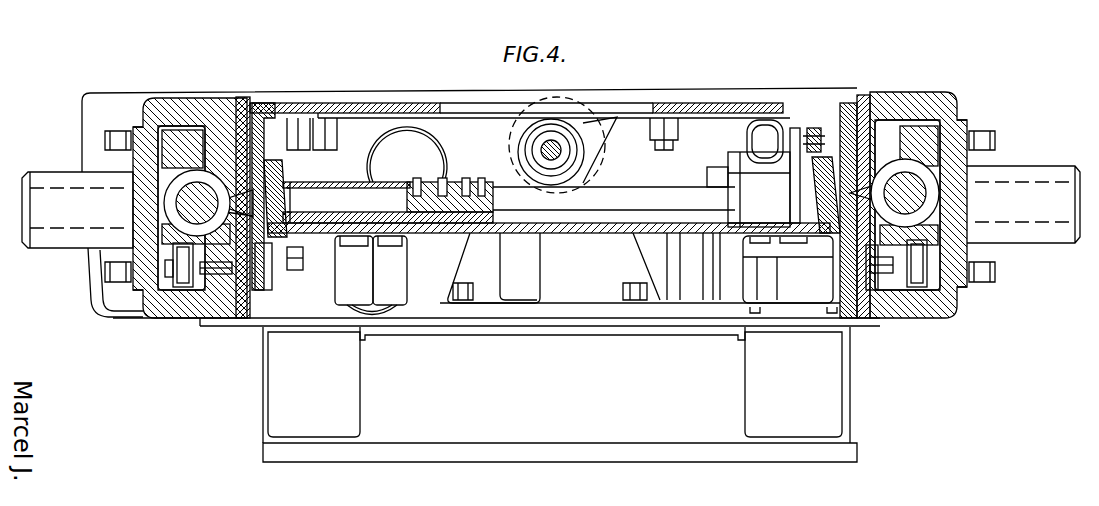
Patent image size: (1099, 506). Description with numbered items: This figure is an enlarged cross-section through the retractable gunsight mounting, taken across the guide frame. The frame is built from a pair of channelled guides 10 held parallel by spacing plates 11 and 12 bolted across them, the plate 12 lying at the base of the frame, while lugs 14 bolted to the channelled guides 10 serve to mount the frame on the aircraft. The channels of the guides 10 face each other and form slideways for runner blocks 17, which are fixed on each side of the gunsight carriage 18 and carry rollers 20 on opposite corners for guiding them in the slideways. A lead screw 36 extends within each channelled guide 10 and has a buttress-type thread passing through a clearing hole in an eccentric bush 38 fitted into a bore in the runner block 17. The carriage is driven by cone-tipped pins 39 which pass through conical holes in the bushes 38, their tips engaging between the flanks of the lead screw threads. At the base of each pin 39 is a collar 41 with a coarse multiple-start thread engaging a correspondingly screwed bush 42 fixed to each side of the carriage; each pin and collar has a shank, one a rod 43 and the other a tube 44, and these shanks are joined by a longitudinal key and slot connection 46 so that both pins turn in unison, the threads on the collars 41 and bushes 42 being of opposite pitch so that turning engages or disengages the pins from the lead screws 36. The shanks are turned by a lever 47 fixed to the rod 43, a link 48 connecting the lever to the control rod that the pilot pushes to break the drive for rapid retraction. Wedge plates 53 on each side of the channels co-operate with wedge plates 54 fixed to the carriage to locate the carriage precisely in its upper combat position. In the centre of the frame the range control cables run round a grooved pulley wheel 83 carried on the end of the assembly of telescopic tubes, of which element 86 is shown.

The channelled guide 10 is at (172, 106).
The spacing plate 11 is at (327, 93).
The spacing plate 12 is at (226, 326).
The lug 14 is at (42, 169).
The runner block 17 is at (147, 121).
The gunsight carriage 18 is at (378, 108).
The roller 20 is at (173, 293).
The lead screw 36 is at (177, 203).
The eccentric bush 38 is at (207, 125).
The cone-tipped pin 39 is at (183, 288).
The collar 41 is at (288, 173).
The screwed bush 42 is at (266, 126).
The rod 43 is at (622, 188).
The tube 44 is at (350, 177).
The key and slot connection 46 is at (446, 181).
The lever 47 is at (795, 130).
The link 48 is at (815, 128).
The wedge plate 53 is at (243, 103).
The wedge plate 54 is at (272, 283).
The grooved pulley wheel 83 is at (600, 123).
The telescopic tube element 86 is at (551, 140).